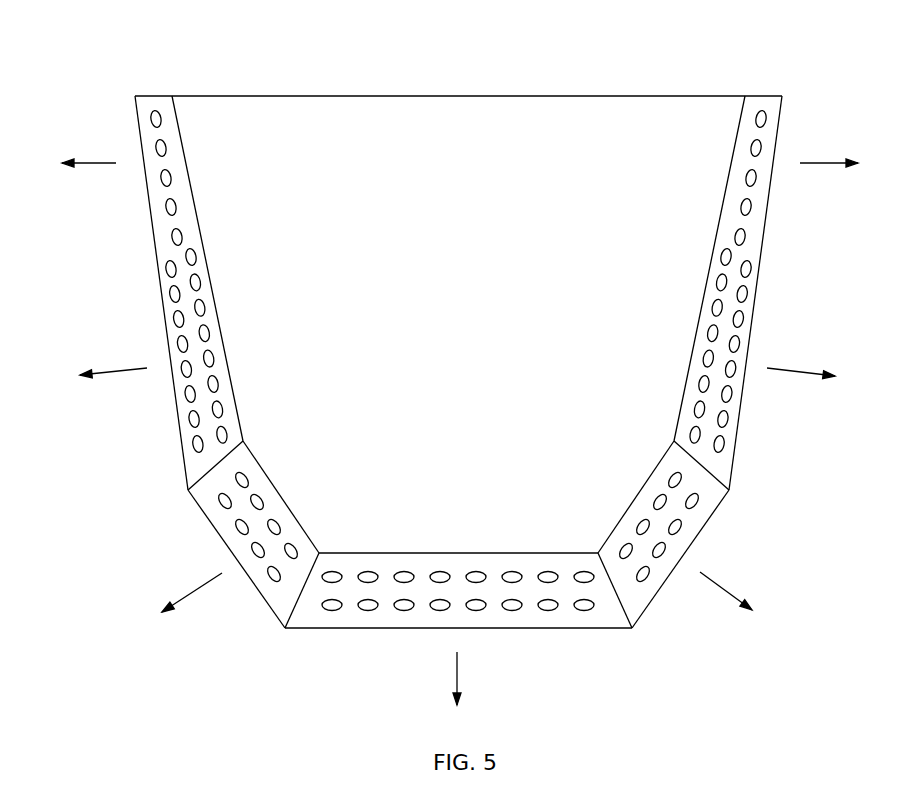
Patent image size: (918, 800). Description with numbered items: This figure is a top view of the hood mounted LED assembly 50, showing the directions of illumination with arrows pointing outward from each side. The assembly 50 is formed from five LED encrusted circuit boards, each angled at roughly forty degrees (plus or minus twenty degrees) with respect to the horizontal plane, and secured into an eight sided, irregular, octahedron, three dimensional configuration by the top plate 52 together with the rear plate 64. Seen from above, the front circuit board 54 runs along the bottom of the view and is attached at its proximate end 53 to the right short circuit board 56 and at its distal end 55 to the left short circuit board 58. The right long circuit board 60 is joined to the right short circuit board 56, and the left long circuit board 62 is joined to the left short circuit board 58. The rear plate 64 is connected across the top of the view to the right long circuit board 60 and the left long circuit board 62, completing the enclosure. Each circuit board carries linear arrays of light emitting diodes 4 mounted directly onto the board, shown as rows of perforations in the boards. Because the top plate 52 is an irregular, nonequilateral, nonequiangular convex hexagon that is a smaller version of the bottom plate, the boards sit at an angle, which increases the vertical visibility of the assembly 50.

The hood mounted LED assembly 50 is at (460, 362).
The top plate 52 is at (266, 128).
The rear plate 64 is at (457, 95).
The right long circuit board 60 is at (760, 273).
The left long circuit board 62 is at (170, 385).
The left short circuit board 58 is at (283, 490).
The right short circuit board 56 is at (702, 530).
The distal end 55 is at (298, 598).
The proximate end 53 is at (617, 595).
The front circuit board 54 is at (458, 590).
The light emitting diode 4 is at (471, 571).